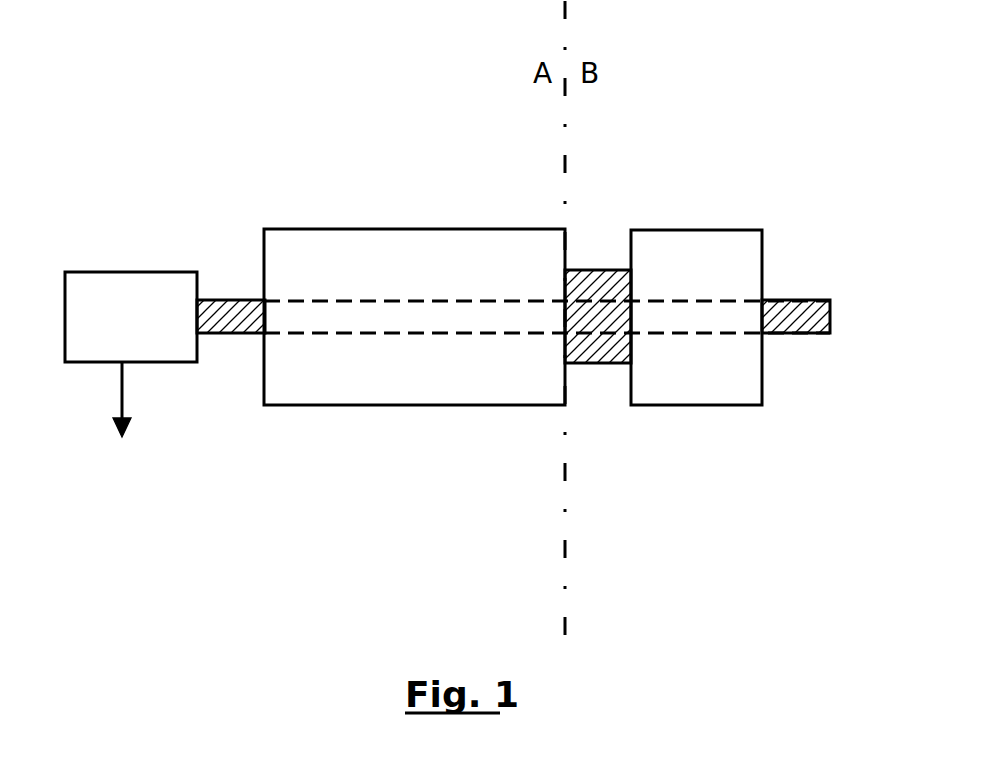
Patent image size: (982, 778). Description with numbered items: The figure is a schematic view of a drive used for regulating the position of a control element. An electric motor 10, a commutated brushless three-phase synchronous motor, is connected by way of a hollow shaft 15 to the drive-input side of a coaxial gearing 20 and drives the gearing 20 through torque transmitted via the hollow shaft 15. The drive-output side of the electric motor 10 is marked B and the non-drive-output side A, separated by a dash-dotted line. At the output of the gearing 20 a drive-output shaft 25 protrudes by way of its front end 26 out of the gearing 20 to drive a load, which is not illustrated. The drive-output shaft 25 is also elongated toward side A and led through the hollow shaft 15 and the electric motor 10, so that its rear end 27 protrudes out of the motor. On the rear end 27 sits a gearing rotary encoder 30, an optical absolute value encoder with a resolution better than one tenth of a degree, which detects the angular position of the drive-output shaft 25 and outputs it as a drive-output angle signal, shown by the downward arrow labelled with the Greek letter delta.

The electric motor 10 is at (483, 405).
The hollow shaft 15 is at (602, 270).
The coaxial gearing 20 is at (670, 405).
The drive-output shaft 25 is at (521, 329).
The front end 26 is at (803, 335).
The rear end 27 is at (240, 302).
The gearing rotary encoder 30 is at (152, 362).